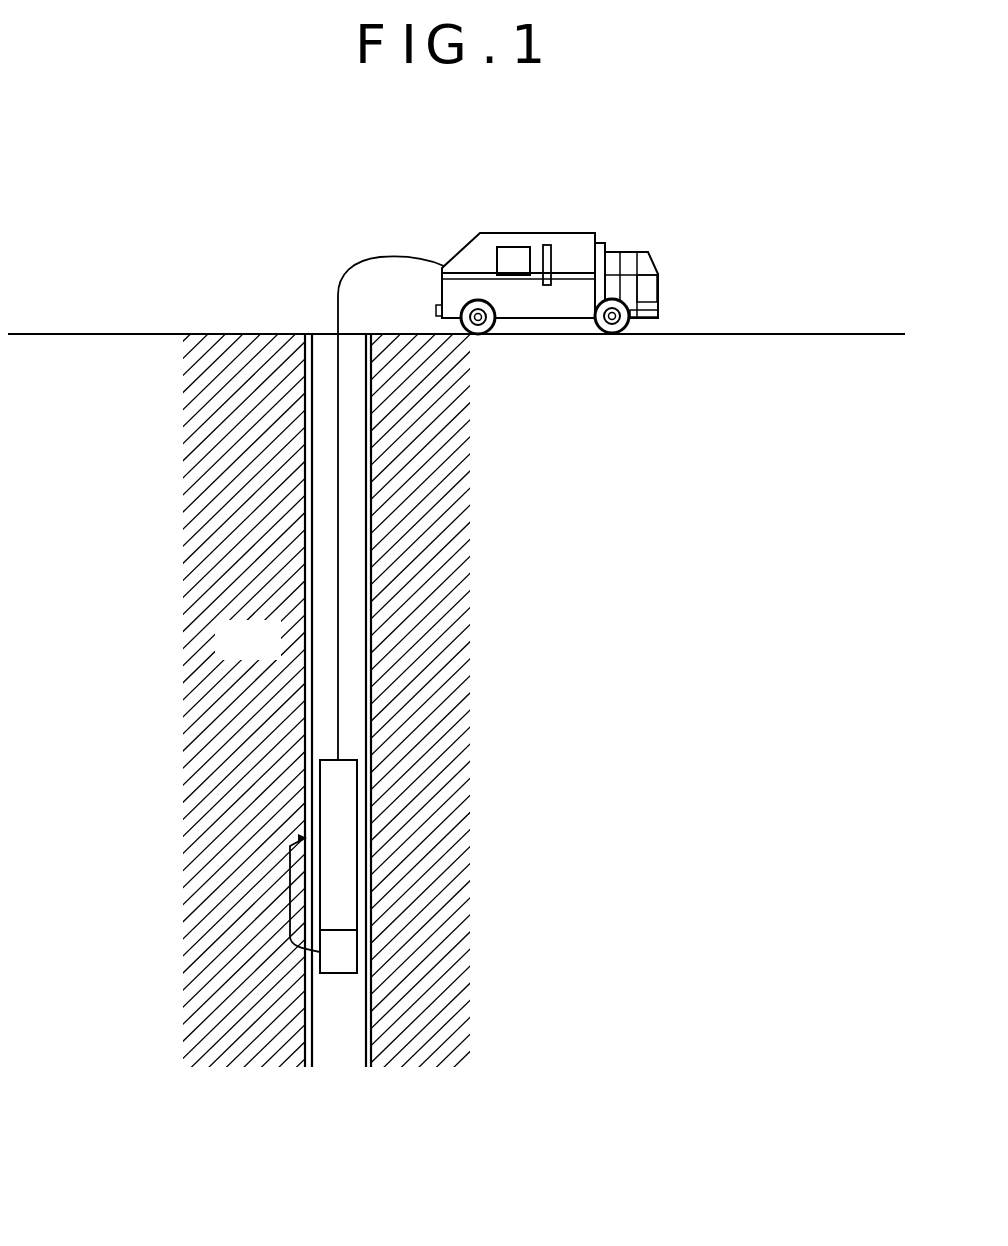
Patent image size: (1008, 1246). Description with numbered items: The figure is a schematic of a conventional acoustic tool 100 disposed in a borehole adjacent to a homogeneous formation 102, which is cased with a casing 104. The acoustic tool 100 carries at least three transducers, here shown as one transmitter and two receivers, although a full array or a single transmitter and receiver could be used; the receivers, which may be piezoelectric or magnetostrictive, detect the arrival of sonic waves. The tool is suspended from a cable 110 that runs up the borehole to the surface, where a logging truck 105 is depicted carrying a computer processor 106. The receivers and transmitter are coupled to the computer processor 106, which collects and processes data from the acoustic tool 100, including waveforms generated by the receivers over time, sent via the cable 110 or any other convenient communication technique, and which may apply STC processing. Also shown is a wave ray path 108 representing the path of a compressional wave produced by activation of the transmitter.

The acoustic tool 100 is at (343, 862).
The homogeneous formation 102 is at (273, 654).
The casing 104 is at (366, 640).
The surface logging truck 105 is at (629, 234).
The computer processor 106 is at (503, 256).
The wave ray path 108 is at (289, 877).
The cable 110 is at (337, 507).